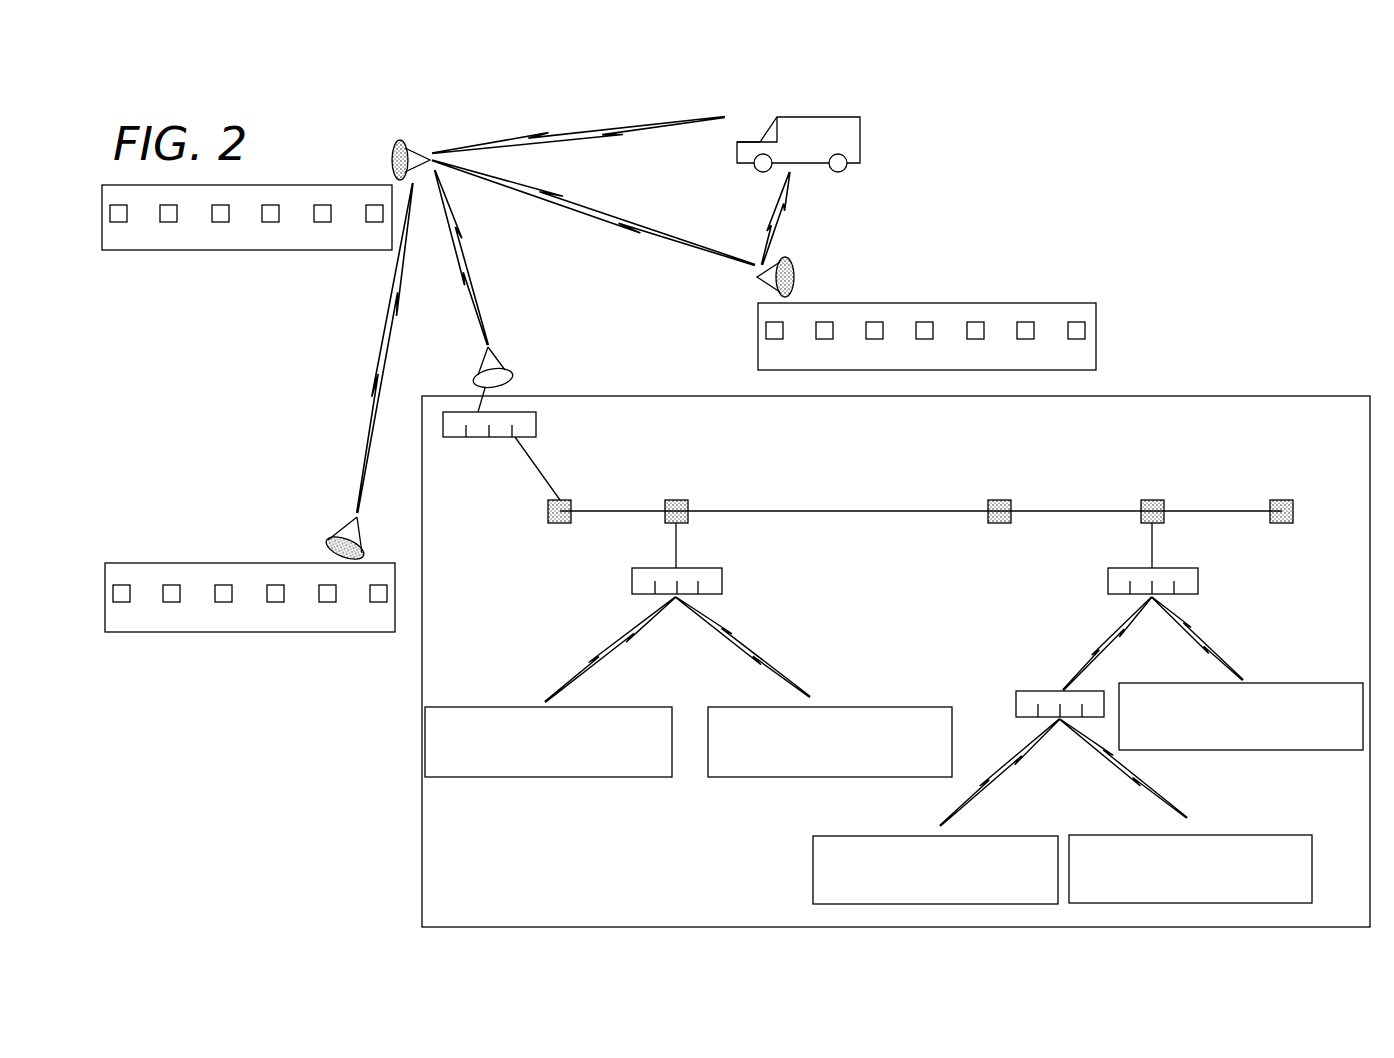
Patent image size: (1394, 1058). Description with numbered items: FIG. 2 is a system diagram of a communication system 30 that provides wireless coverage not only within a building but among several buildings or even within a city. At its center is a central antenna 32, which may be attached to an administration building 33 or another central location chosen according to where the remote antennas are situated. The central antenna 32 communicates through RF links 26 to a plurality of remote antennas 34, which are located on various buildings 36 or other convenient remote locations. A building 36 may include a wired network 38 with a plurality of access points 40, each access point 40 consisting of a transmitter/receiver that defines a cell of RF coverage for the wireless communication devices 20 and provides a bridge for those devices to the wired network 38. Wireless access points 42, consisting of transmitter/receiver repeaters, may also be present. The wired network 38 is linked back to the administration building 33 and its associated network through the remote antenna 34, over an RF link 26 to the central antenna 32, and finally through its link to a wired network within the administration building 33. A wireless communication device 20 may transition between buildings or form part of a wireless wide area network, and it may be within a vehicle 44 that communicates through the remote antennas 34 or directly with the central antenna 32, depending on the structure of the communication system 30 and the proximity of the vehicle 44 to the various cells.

The wireless communication device 20 is at (582, 777).
The RF link 26 is at (590, 139).
The communication system 30 is at (197, 409).
The central antenna 32 is at (392, 158).
The administration building 33 is at (250, 251).
The remote antenna 34 is at (795, 270).
The building 36 is at (1097, 333).
The wired network 38 is at (862, 510).
The access point 40 is at (724, 577).
The wireless access point 42 is at (1013, 710).
The vehicle 44 is at (860, 140).